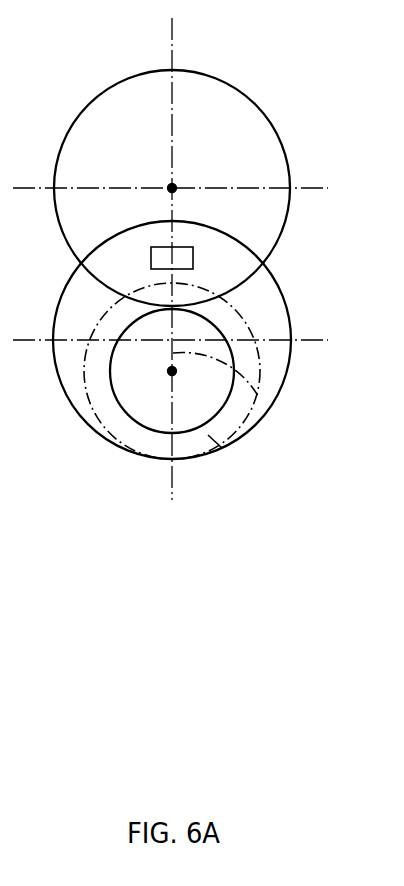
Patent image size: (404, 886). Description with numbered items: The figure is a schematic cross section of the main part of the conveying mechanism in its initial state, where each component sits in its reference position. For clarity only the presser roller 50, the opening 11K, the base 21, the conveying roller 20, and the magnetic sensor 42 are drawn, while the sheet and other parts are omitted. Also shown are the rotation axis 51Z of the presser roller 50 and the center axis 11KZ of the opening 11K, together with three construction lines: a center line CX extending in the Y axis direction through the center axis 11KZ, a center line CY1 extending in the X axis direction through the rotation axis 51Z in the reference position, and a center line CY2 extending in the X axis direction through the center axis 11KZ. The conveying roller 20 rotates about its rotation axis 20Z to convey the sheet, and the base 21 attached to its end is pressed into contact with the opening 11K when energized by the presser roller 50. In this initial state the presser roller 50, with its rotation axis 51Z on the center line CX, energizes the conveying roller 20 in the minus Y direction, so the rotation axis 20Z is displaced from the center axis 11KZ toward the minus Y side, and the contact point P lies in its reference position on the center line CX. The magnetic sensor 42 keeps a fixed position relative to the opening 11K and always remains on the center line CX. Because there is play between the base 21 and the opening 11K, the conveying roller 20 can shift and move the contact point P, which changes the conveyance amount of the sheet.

The center line CX is at (173, 32).
The center line CY1 is at (305, 188).
The center line CY2 is at (305, 342).
The presser roller 50 is at (265, 143).
The rotation axis 51Z is at (175, 187).
The opening 11K is at (282, 306).
The center axis 11KZ is at (268, 388).
The conveying roller 20 is at (212, 380).
The rotation axis 20Z is at (170, 372).
The base 21 is at (223, 453).
The magnetic sensor 42 is at (193, 255).
The contact point P is at (168, 312).